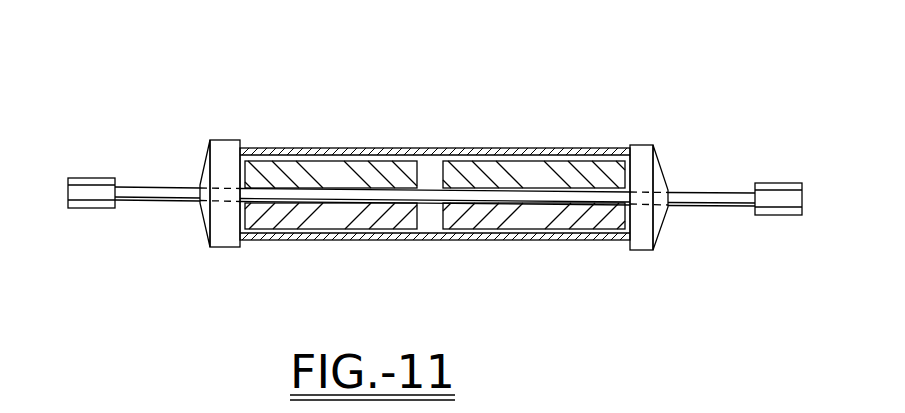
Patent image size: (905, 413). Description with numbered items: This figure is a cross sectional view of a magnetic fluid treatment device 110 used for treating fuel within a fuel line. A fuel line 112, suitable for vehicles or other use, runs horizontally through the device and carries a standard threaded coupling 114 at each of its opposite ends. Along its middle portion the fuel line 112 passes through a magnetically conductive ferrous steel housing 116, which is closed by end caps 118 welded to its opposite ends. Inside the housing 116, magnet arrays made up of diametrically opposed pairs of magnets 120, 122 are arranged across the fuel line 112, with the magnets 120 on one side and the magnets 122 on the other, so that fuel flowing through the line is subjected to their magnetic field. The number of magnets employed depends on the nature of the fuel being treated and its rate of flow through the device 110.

The magnetic fluid treatment device 110 is at (280, 124).
The fuel line 112 is at (145, 203).
The threaded coupling 114 is at (80, 181).
The magnetically conductive ferrous steel housing 116 is at (503, 152).
The end caps 118 is at (222, 248).
The magnet 120 is at (364, 164).
The magnet 122 is at (343, 230).